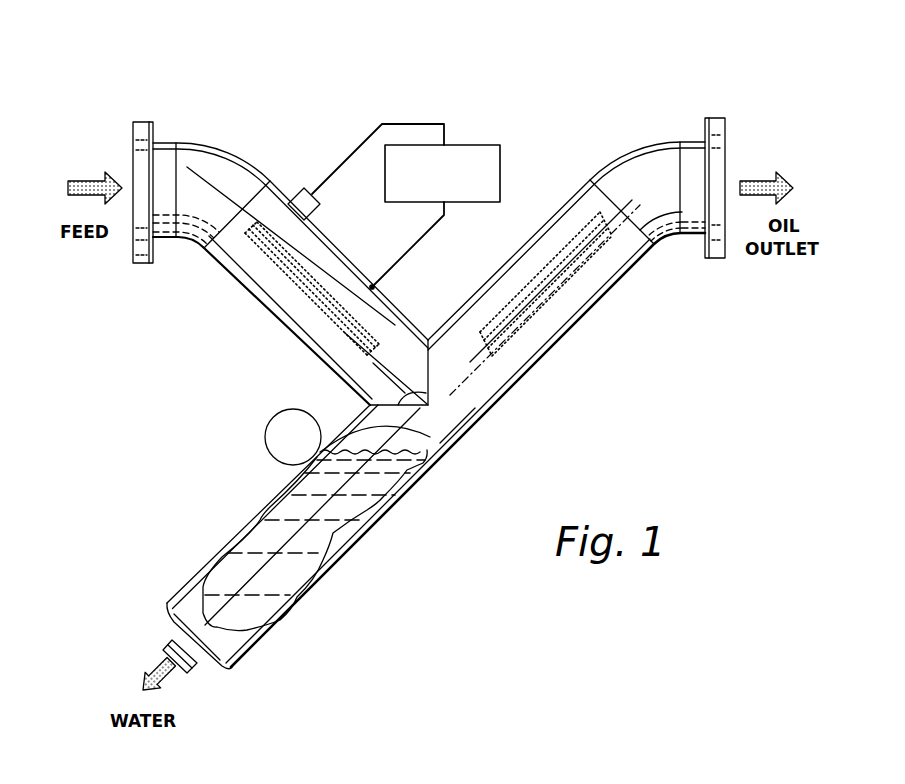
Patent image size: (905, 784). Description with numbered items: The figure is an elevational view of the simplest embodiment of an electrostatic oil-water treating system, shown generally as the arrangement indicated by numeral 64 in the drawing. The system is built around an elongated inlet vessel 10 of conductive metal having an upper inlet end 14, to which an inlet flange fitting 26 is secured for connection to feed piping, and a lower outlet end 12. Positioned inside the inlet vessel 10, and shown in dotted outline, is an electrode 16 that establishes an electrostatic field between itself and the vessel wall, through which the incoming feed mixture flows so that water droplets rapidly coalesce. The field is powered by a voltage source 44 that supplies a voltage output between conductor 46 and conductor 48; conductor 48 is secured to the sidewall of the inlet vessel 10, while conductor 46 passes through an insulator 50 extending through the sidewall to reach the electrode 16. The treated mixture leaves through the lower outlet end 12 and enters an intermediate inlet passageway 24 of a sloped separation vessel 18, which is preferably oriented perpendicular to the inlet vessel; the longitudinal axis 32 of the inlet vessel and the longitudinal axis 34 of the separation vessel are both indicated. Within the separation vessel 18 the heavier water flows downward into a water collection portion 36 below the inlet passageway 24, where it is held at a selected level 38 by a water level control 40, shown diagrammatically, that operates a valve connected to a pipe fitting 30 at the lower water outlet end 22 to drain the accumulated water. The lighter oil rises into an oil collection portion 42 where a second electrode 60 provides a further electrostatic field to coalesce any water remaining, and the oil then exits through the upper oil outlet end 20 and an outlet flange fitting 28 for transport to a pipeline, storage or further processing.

The inlet vessel 10 is at (430, 362).
The lower outlet end 12 is at (428, 372).
The upper inlet end 14 is at (216, 232).
The electrode 16 is at (297, 310).
The separation vessel 18 is at (493, 412).
The upper oil outlet end 20 is at (660, 236).
The lower water outlet end 22 is at (217, 660).
The intermediate inlet passageway 24 is at (432, 412).
The inlet flange fitting 26 is at (143, 255).
The outlet flange fitting 28 is at (717, 128).
The pipe fitting 30 is at (170, 650).
The longitudinal axis of inlet vessel 32 is at (383, 362).
The longitudinal axis of separation vessel 34 is at (383, 510).
The water collection portion 36 is at (330, 563).
The water level 38 is at (443, 443).
The water level control 40 is at (268, 449).
The oil collection portion 42 is at (560, 343).
The voltage source 44 is at (465, 145).
The conductor 46 is at (413, 124).
The conductor 48 is at (430, 229).
The insulator 50 is at (302, 186).
The second electrode 60 is at (567, 257).
The electrostatic treater 64 is at (455, 95).